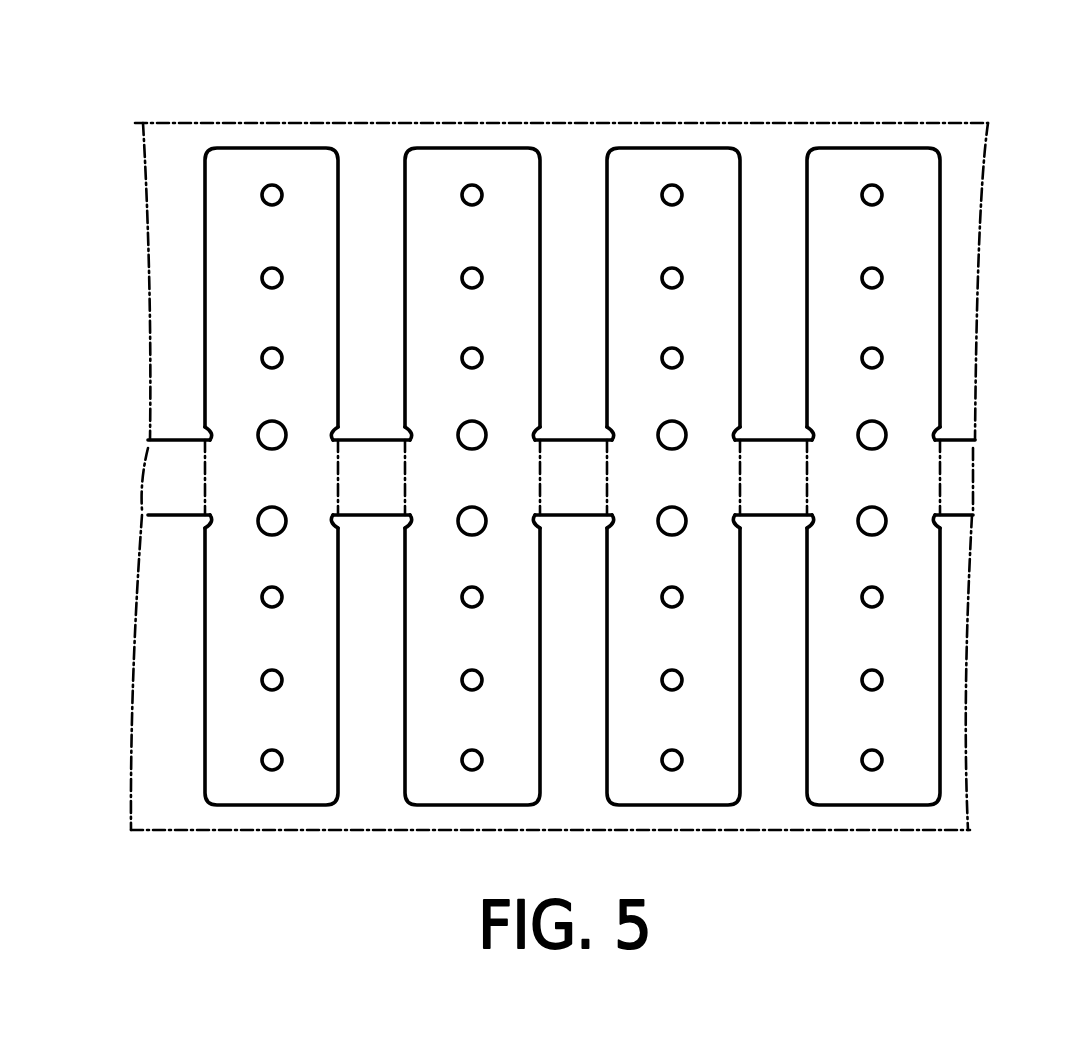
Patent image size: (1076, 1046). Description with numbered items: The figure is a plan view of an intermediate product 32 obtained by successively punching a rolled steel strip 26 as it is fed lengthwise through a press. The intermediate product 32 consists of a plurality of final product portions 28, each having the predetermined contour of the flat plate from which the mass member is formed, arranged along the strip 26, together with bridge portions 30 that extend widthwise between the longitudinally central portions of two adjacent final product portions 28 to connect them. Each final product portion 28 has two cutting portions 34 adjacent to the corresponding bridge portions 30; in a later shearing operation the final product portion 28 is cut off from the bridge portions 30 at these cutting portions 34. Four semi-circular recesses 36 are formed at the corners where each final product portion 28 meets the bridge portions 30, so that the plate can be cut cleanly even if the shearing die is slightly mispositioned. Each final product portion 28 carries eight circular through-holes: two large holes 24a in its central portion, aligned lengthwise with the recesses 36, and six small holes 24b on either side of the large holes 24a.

The strip 26 is at (842, 103).
The intermediate product 32 is at (273, 130).
The final product portion 28 is at (243, 787).
The bridge portion 30 is at (175, 485).
The recess 36 is at (200, 435).
The cutting portion 34 is at (216, 480).
The large hole 24a is at (262, 430).
The small hole 24b is at (268, 193).